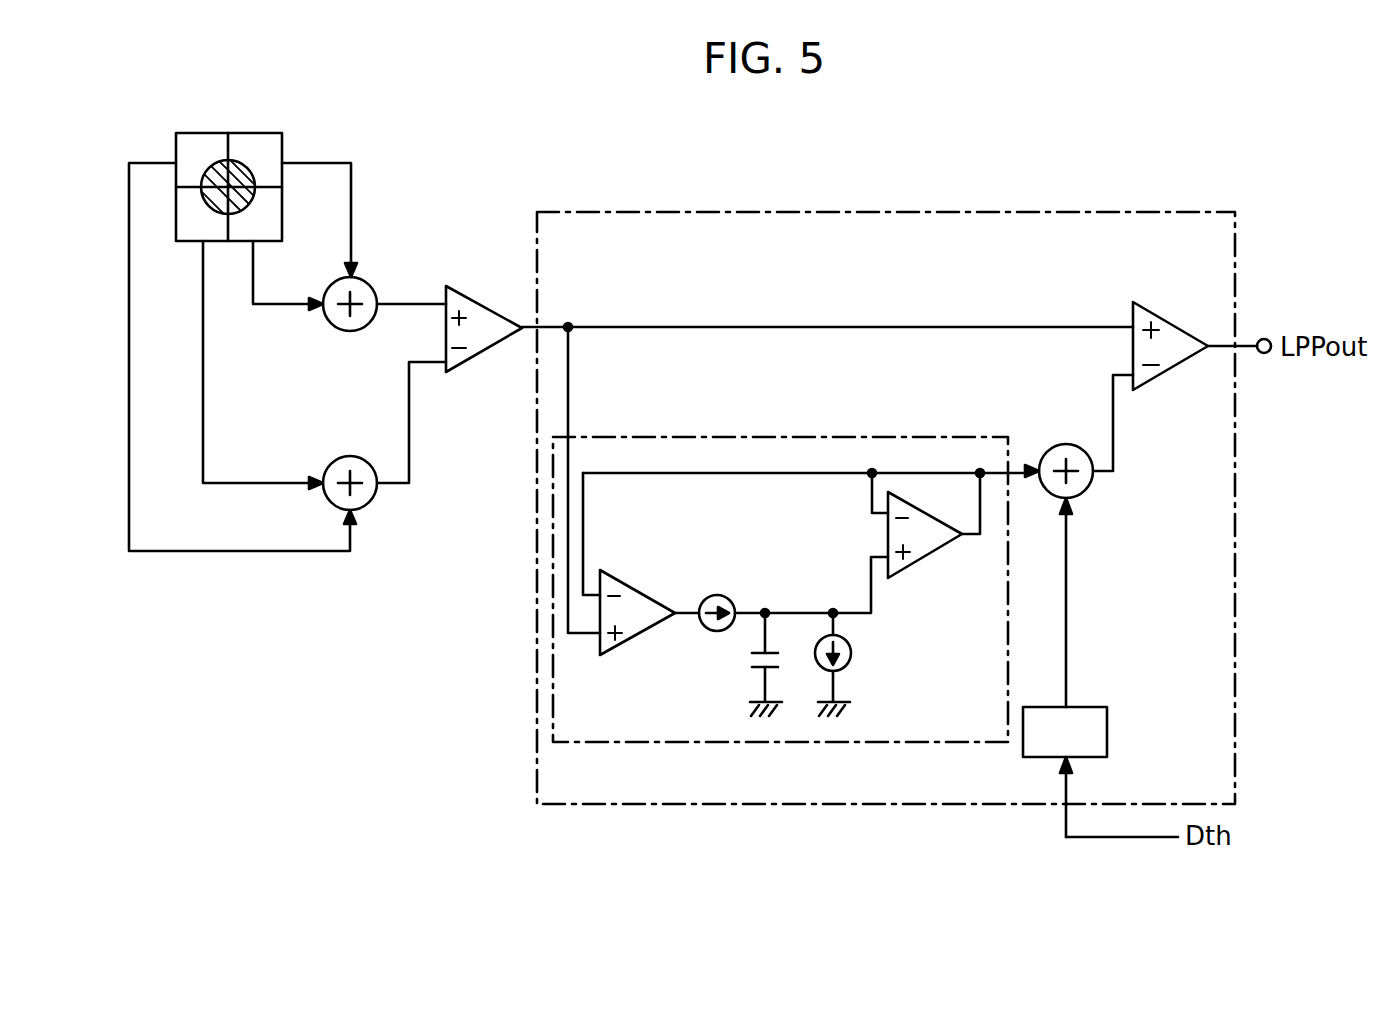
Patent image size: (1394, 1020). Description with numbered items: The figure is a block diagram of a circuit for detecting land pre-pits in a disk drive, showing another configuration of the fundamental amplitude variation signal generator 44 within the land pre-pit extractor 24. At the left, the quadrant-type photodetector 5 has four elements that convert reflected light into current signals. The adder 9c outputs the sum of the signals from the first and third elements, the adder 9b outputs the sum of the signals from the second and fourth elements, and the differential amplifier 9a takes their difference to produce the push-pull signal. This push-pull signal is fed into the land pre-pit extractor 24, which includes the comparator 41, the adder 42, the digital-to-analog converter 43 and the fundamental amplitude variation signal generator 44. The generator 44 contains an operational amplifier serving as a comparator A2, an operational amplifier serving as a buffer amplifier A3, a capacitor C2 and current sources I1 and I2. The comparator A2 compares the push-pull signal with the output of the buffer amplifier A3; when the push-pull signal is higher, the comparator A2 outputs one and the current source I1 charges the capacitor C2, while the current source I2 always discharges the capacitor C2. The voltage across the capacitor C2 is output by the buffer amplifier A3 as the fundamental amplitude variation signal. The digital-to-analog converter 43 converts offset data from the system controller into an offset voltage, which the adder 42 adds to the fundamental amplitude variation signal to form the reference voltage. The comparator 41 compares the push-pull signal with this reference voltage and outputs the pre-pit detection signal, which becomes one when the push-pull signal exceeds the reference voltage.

The photodetector 5 is at (246, 133).
The differential amplifier 9a is at (482, 300).
The adder 9b is at (367, 280).
The adder 9c is at (350, 456).
The land pre-pit extractor 24 is at (637, 805).
The comparator 41 is at (1160, 302).
The adder 42 is at (1068, 443).
The digital-to-analog converter 43 is at (1107, 727).
The fundamental amplitude variation signal generator 44 is at (655, 437).
The comparator A2 is at (646, 632).
The buffer amplifier A3 is at (940, 548).
The current source I1 is at (717, 599).
The current source I2 is at (849, 664).
The capacitor C2 is at (749, 664).